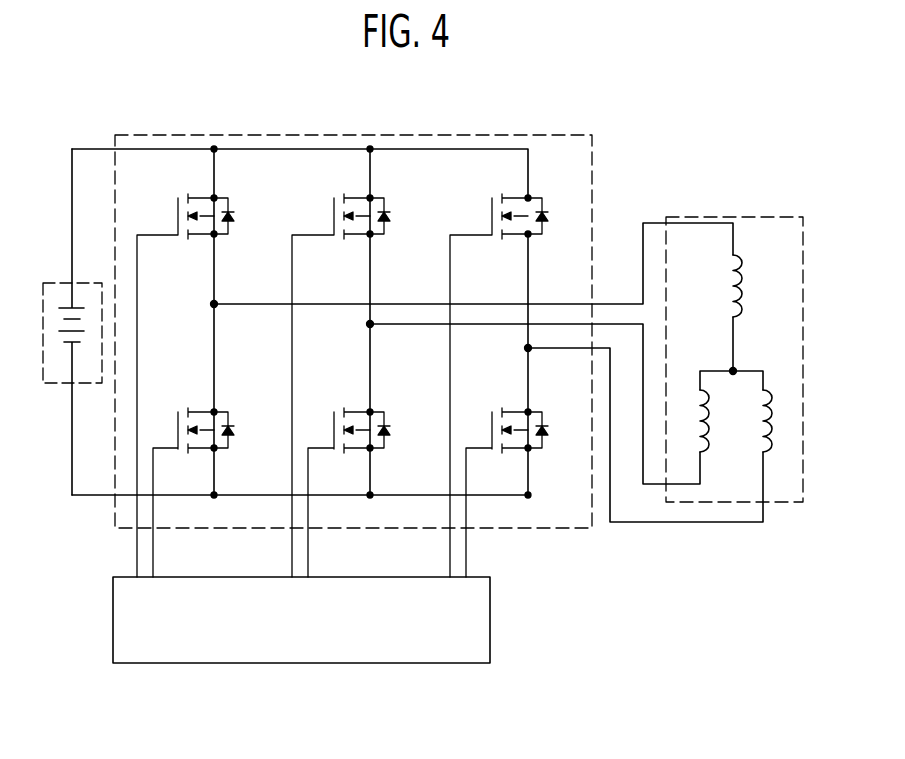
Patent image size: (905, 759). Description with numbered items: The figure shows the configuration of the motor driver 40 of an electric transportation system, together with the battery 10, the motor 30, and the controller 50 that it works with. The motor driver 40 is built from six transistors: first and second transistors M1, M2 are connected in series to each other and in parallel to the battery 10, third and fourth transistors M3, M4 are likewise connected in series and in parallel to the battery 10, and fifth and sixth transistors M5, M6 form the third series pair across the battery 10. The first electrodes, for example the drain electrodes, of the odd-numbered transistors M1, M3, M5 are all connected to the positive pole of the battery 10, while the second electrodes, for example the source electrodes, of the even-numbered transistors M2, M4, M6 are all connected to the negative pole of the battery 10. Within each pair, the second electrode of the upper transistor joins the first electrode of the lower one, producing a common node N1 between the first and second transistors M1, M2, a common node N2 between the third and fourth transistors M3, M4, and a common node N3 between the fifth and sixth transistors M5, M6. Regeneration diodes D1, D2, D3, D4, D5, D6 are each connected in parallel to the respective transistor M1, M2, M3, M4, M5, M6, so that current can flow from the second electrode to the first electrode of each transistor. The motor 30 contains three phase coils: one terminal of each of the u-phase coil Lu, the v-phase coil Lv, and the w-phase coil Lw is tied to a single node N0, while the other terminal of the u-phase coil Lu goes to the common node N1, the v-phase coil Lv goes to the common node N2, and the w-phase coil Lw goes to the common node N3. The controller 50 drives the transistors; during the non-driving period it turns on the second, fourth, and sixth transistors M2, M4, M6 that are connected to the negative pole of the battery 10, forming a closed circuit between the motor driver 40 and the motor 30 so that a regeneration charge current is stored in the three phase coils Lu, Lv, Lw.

The battery 10 is at (62, 283).
The motor 30 is at (734, 331).
The motor driver 40 is at (425, 133).
The controller 50 is at (312, 663).
The first transistor M1 is at (176, 215).
The second transistor M2 is at (176, 429).
The third transistor M3 is at (332, 215).
The fourth transistor M4 is at (332, 429).
The fifth transistor M5 is at (490, 215).
The sixth transistor M6 is at (488, 429).
The regeneration diode D1 is at (236, 216).
The regeneration diode D2 is at (236, 430).
The regeneration diode D3 is at (392, 216).
The regeneration diode D4 is at (392, 430).
The regeneration diode D5 is at (550, 216).
The regeneration diode D6 is at (550, 430).
The common node N1 is at (458, 270).
The common node N2 is at (519, 399).
The common node N3 is at (630, 430).
The node N0 is at (730, 353).
The u-phase coil Lu is at (747, 286).
The v-phase coil Lv is at (714, 421).
The w-phase coil Lw is at (778, 421).